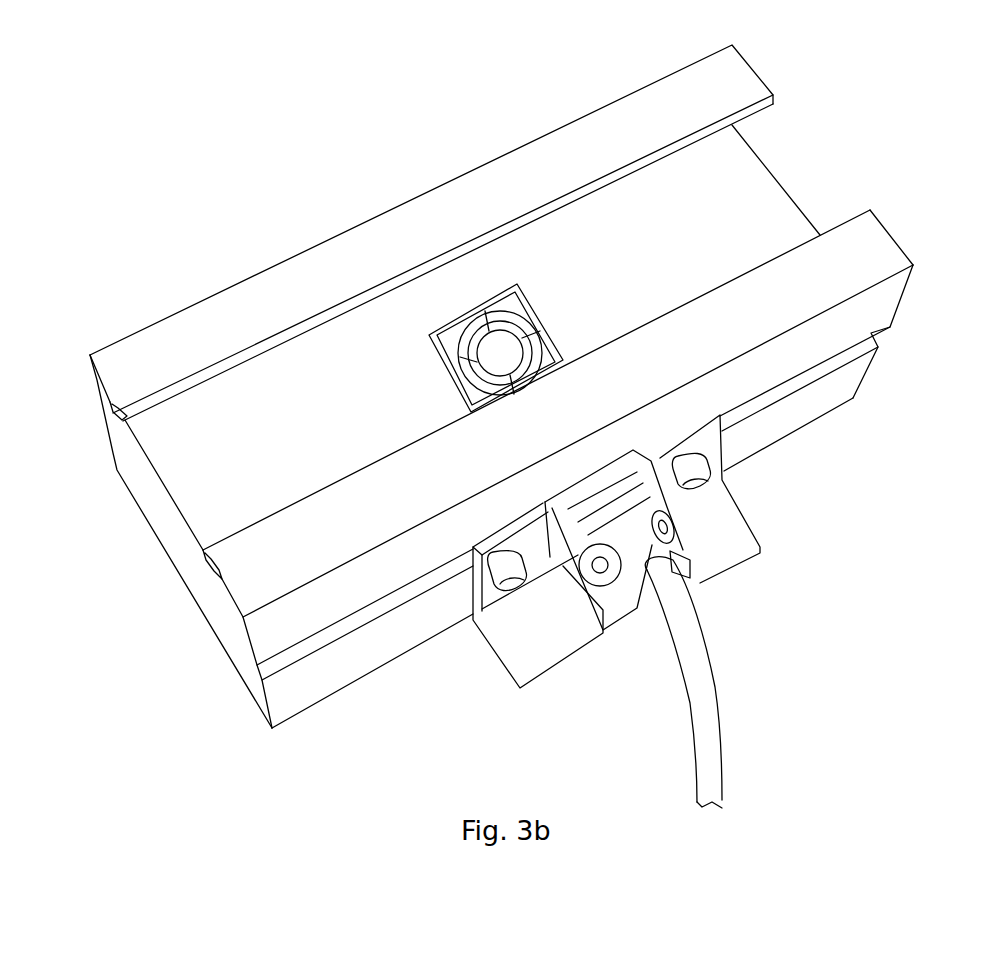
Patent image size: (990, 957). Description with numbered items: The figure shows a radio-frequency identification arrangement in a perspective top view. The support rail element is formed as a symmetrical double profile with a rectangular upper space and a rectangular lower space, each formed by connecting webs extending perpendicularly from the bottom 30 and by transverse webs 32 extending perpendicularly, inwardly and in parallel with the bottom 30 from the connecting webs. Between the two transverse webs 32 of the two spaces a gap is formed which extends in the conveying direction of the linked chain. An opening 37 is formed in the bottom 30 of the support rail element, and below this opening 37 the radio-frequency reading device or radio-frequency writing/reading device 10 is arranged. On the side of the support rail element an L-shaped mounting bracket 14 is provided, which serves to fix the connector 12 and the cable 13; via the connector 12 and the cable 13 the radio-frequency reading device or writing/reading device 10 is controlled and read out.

The radio-frequency reading device or radio-frequency writing/reading device 10 is at (437, 325).
The connector 12 is at (622, 530).
The cable 13 is at (720, 730).
The L-shaped mounting bracket 14 is at (522, 632).
The bottom 30 is at (752, 202).
The transverse webs 32 is at (732, 92).
The opening 37 is at (510, 307).